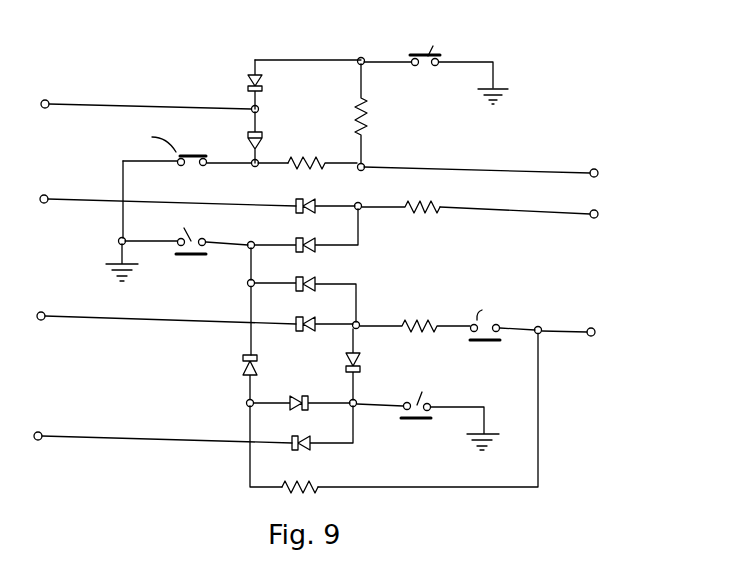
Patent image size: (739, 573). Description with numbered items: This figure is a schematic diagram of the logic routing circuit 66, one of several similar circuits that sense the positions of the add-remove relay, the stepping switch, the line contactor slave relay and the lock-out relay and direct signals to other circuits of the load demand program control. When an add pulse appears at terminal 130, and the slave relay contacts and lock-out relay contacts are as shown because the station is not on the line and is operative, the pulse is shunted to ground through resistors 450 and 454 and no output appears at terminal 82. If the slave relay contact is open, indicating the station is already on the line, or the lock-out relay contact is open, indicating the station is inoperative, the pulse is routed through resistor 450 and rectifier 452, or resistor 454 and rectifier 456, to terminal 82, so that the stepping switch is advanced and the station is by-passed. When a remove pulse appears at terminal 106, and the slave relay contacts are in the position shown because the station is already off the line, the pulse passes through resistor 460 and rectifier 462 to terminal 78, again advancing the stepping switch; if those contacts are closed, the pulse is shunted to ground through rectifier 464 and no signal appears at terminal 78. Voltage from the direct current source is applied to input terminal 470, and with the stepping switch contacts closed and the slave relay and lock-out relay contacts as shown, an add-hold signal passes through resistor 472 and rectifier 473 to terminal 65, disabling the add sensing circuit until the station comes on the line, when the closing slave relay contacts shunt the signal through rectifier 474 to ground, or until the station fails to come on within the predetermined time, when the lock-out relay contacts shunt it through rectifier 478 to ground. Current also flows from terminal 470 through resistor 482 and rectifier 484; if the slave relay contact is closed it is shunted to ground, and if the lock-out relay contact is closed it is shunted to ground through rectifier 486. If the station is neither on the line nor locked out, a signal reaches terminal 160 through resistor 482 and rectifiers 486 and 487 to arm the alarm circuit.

The logic routing circuit 66 is at (331, 28).
The terminal 82 is at (45, 98).
The rectifier 452 is at (248, 84).
The rectifier 456 is at (248, 146).
The resistor 454 is at (304, 159).
The resistor 450 is at (372, 119).
The terminal 130 is at (596, 162).
The terminal 78 is at (44, 195).
The rectifier 462 is at (304, 197).
The resistor 460 is at (417, 187).
The terminal 106 is at (594, 210).
The rectifier 464 is at (304, 237).
The rectifier 474 is at (302, 278).
The terminal 65 is at (42, 317).
The rectifier 473 is at (306, 309).
The resistor 472 is at (414, 307).
The input terminal 470 is at (590, 328).
The rectifier 484 is at (240, 368).
The rectifier 478 is at (363, 364).
The rectifier 486 is at (297, 395).
The rectifier 487 is at (297, 435).
The resistor 482 is at (295, 476).
The terminal 160 is at (37, 432).